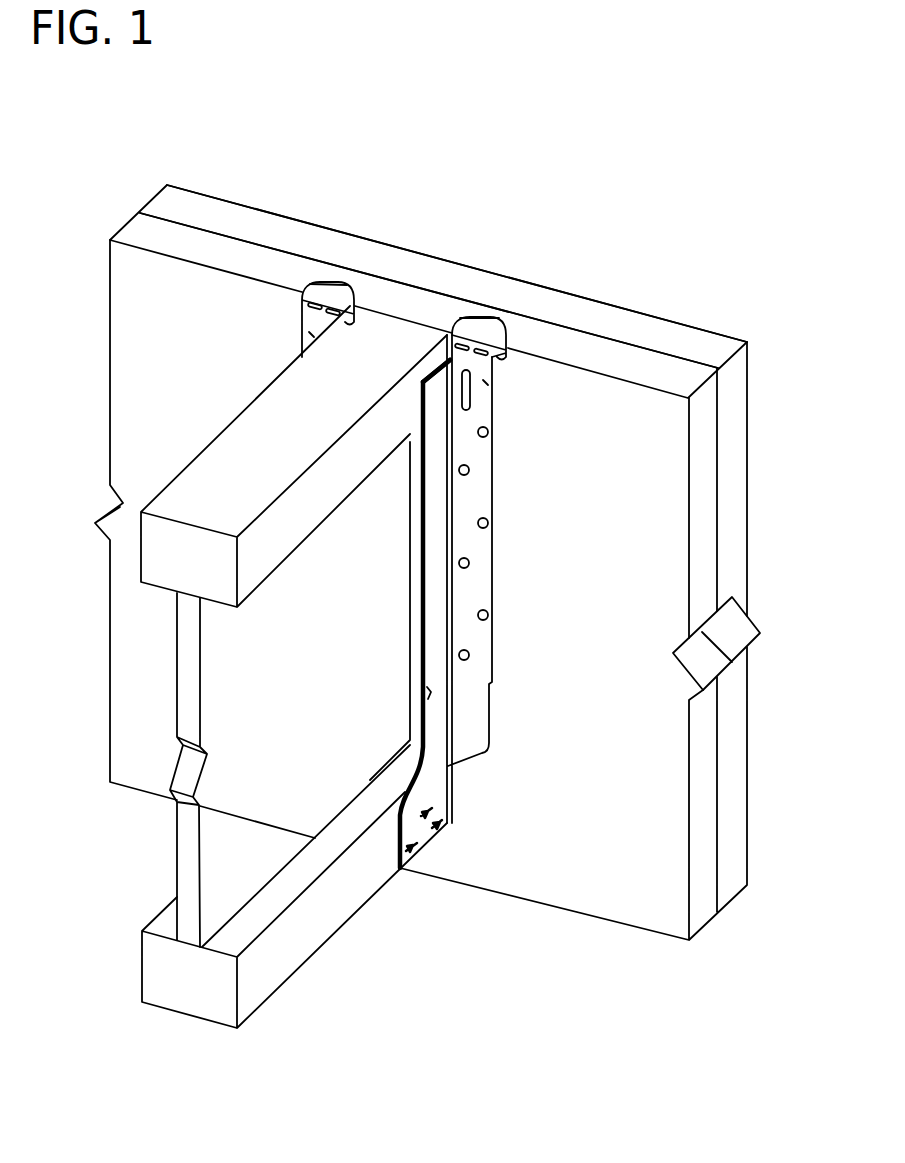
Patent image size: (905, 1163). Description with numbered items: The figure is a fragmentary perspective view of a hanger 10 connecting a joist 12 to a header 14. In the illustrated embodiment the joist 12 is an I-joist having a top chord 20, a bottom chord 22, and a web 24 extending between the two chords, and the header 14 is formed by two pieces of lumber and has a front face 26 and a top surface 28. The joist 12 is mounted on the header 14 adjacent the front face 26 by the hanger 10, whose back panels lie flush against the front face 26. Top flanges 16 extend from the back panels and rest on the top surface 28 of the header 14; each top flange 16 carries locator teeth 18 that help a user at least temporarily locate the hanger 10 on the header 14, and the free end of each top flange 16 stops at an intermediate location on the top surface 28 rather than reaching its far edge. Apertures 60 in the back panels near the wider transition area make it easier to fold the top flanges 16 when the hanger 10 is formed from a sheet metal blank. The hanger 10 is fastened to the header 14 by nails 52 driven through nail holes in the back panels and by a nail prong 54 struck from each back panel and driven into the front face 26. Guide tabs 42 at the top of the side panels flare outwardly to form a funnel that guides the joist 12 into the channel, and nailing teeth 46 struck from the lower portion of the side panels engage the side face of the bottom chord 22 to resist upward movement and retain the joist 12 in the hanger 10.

The hanger 10 is at (527, 463).
The joist 12 is at (158, 1008).
The header 14 is at (228, 194).
The top flange 16 is at (330, 287).
The locator teeth 18 is at (355, 294).
The top chord 20 is at (252, 442).
The bottom chord 22 is at (158, 965).
The web 24 is at (218, 677).
The front face 26 is at (629, 618).
The top surface 28 is at (650, 368).
The guide tabs 42 is at (450, 358).
The nailing teeth 46 is at (425, 812).
The nails 52 is at (486, 523).
The nail prong 54 is at (468, 392).
The apertures 60 is at (317, 313).